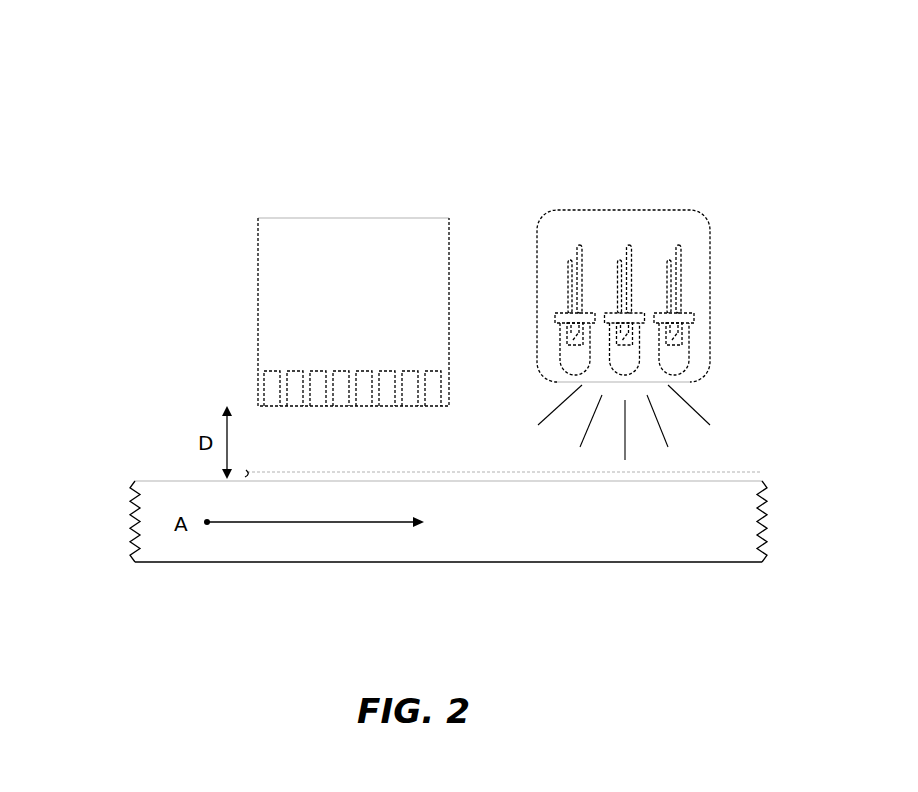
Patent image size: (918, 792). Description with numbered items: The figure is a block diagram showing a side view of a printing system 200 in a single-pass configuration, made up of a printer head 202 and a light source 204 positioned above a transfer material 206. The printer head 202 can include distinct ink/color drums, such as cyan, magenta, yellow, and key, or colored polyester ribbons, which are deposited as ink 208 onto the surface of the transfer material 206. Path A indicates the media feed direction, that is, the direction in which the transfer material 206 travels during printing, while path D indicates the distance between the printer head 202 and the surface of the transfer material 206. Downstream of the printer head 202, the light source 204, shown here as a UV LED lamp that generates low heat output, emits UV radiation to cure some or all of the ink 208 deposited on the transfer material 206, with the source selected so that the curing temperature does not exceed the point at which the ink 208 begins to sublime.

The printing system 200 is at (138, 104).
The printer head 202 is at (290, 218).
The light source 204 is at (583, 208).
The transfer material 206 is at (755, 562).
The ink 208 is at (762, 471).